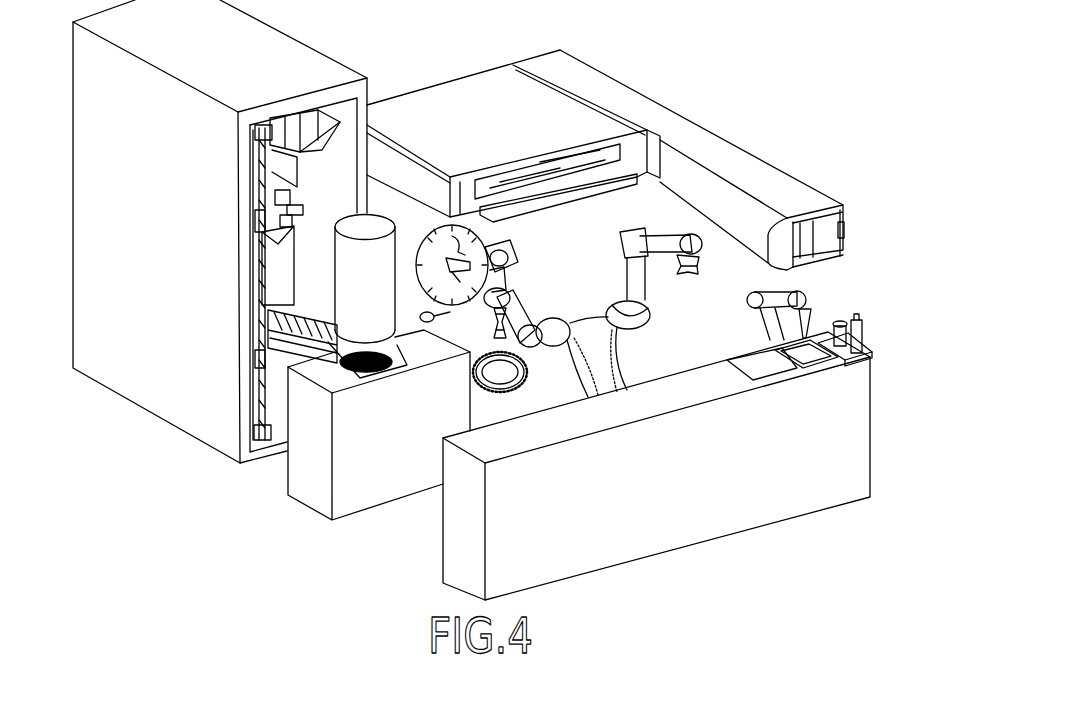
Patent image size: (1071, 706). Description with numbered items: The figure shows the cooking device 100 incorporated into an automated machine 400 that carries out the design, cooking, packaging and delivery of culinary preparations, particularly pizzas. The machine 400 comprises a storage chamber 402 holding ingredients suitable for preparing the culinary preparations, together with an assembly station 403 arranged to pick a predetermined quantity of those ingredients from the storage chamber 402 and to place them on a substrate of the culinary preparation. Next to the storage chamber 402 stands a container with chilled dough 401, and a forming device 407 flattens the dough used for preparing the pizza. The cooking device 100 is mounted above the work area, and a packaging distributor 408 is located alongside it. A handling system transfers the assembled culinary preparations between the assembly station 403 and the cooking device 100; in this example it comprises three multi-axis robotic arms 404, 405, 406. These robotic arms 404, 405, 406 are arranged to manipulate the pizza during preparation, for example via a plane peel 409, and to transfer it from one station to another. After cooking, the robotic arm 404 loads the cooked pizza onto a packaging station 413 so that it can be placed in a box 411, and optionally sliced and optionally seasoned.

The automated machine 400 is at (755, 73).
The storage chamber 402 is at (266, 28).
The assembly station 403 is at (257, 323).
The container with chilled dough 401 is at (383, 237).
The forming device 407 is at (343, 323).
The cooking device 100 is at (478, 130).
The packaging distributor 408 is at (787, 203).
The robotic arm 404 is at (658, 242).
The robotic arm 405 is at (513, 296).
The peel 409 is at (478, 377).
The box 411 is at (762, 372).
The packaging station 413 is at (861, 363).
The robotic arm 406 is at (812, 305).